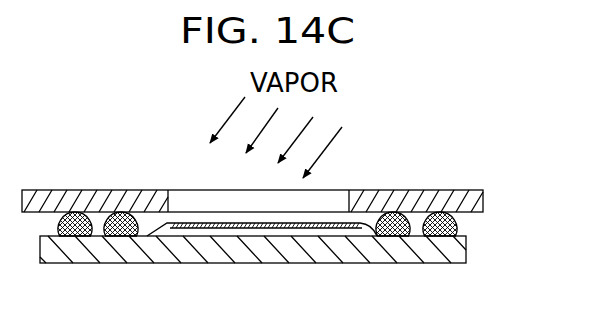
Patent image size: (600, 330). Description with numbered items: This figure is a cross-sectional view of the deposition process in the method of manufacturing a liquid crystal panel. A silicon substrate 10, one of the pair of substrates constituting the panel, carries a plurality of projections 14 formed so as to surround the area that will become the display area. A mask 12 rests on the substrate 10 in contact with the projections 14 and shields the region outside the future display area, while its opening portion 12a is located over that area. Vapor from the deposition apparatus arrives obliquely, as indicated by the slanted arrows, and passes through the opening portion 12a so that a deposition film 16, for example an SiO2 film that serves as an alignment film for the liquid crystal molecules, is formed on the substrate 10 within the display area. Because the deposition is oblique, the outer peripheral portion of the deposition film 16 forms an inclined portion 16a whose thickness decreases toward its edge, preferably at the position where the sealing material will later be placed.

The substrate 10 is at (459, 250).
The mask 12 is at (485, 200).
The opening portion 12a is at (190, 208).
The projections 14 is at (120, 213).
The deposition film 16 is at (259, 237).
The inclined portion 16a is at (377, 234).